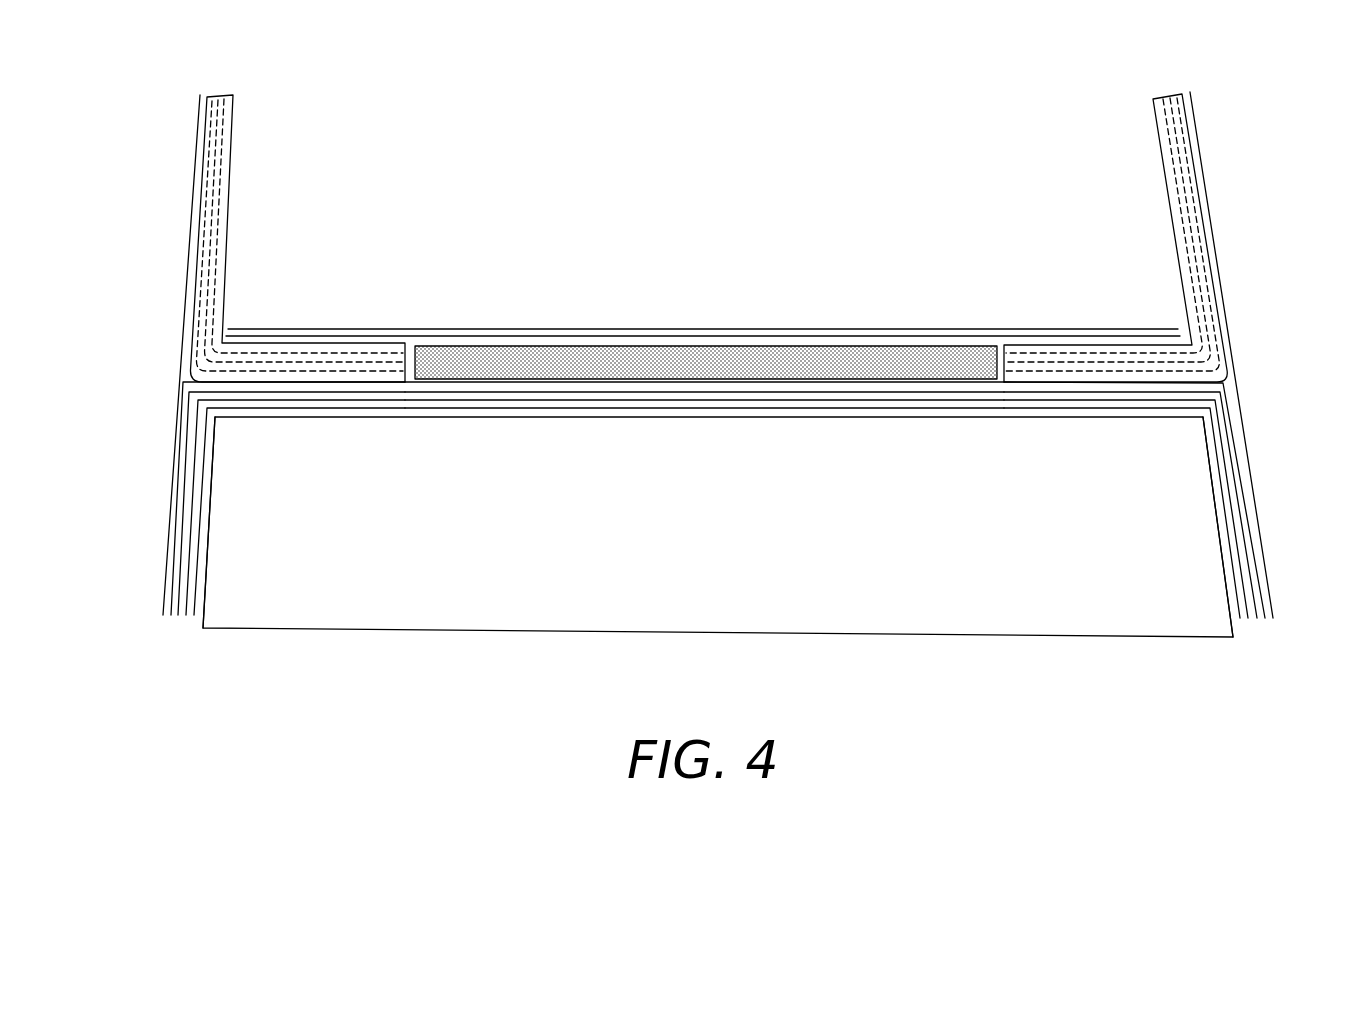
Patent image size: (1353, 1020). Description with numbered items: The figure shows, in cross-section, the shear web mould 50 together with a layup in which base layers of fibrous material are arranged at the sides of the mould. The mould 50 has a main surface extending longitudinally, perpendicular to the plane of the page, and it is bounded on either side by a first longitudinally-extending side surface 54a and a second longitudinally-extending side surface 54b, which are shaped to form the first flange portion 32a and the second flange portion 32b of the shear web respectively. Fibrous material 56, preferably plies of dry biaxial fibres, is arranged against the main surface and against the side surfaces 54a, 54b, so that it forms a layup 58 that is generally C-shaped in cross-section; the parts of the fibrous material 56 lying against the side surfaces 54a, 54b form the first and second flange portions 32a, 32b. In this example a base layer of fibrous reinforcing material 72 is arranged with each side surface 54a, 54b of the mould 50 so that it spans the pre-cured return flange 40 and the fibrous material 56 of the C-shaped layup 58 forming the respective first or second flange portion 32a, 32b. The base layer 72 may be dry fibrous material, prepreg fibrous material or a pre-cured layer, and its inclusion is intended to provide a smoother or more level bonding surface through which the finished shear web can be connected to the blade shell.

The base layer of fibrous reinforcing material 72 is at (187, 270).
The pre-cured return flange 40 is at (280, 256).
The layup 58 is at (612, 396).
The fibrous material 56 is at (482, 402).
The second flange portion 32b is at (195, 528).
The first flange portion 32a is at (1233, 515).
The mould 50 is at (418, 683).
The second longitudinally-extending side surface 54b is at (205, 583).
The first longitudinally-extending side surface 54a is at (1228, 599).